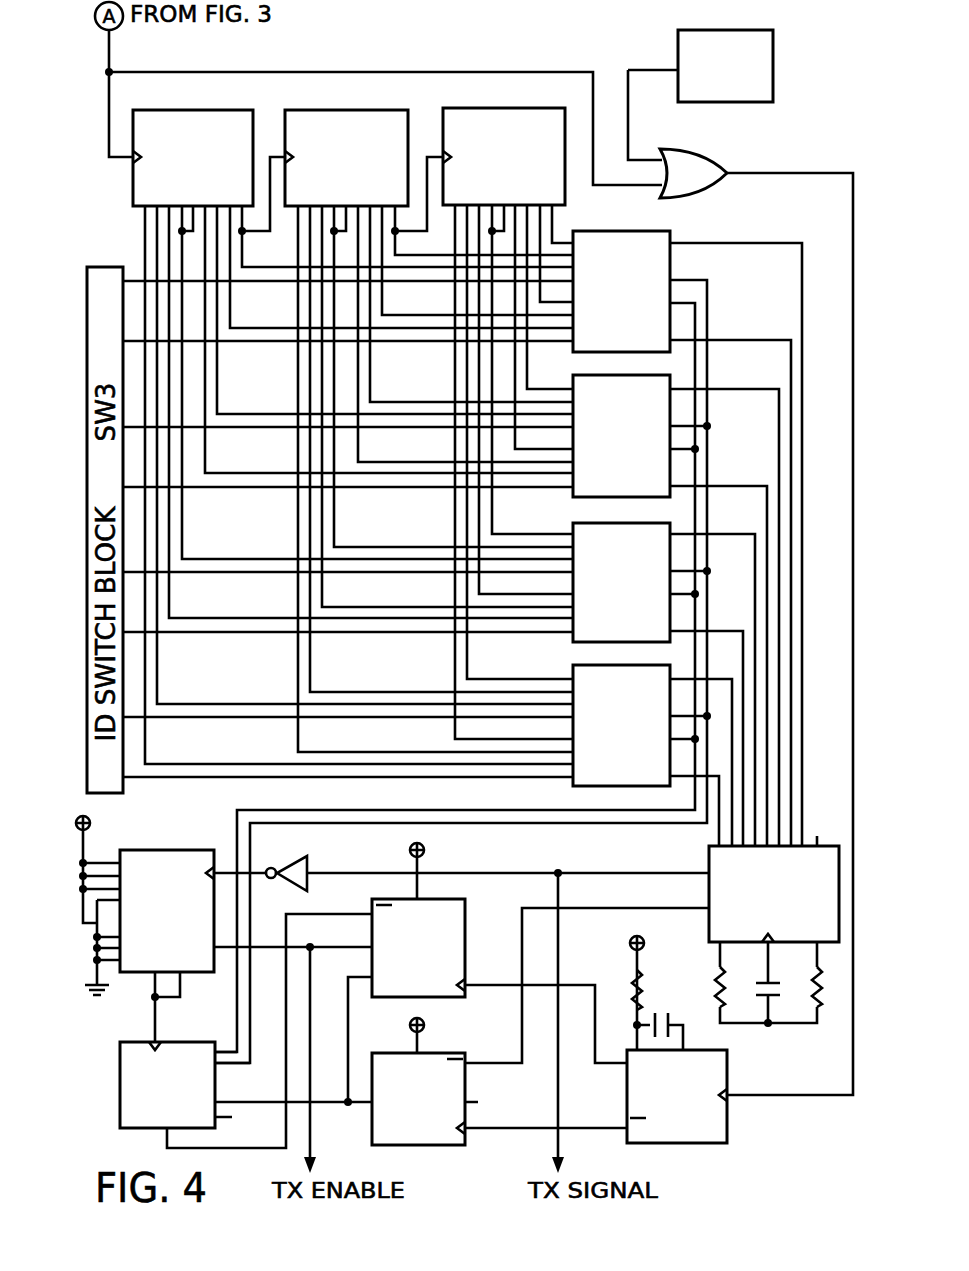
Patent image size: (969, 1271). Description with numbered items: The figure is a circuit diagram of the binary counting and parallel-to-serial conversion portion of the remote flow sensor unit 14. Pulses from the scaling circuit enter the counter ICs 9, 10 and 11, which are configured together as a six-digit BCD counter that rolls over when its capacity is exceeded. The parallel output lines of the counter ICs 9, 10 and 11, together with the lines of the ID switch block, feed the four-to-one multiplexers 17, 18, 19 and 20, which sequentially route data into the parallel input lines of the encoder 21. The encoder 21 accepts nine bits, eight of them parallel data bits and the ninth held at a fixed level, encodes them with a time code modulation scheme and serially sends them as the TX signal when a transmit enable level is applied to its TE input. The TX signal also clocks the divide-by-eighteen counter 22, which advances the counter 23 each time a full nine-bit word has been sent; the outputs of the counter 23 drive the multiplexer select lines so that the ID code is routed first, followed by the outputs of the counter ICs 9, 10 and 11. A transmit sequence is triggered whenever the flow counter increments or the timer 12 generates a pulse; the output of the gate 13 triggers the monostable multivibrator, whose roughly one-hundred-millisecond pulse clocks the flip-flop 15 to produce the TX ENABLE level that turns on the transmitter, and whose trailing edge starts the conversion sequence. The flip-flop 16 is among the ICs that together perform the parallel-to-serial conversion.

The remote flow sensor unit 14 is at (677, 1096).
The timer 12 is at (700, 66).
The BCD counter IC 9 is at (193, 158).
The BCD counter IC 10 is at (346, 158).
The BCD counter IC 11 is at (504, 156).
The gate 13 is at (693, 173).
The flip-flop 15 is at (418, 948).
The flip-flop 16 is at (418, 1099).
The four-to-one multiplexer 17 is at (621, 291).
The four-to-one multiplexer 18 is at (621, 436).
The four-to-one multiplexer 19 is at (621, 583).
The four-to-one multiplexer 20 is at (621, 726).
The encoder 21 is at (774, 894).
The divide-by-eighteen counter 22 is at (168, 911).
The counter 23 is at (167, 1084).